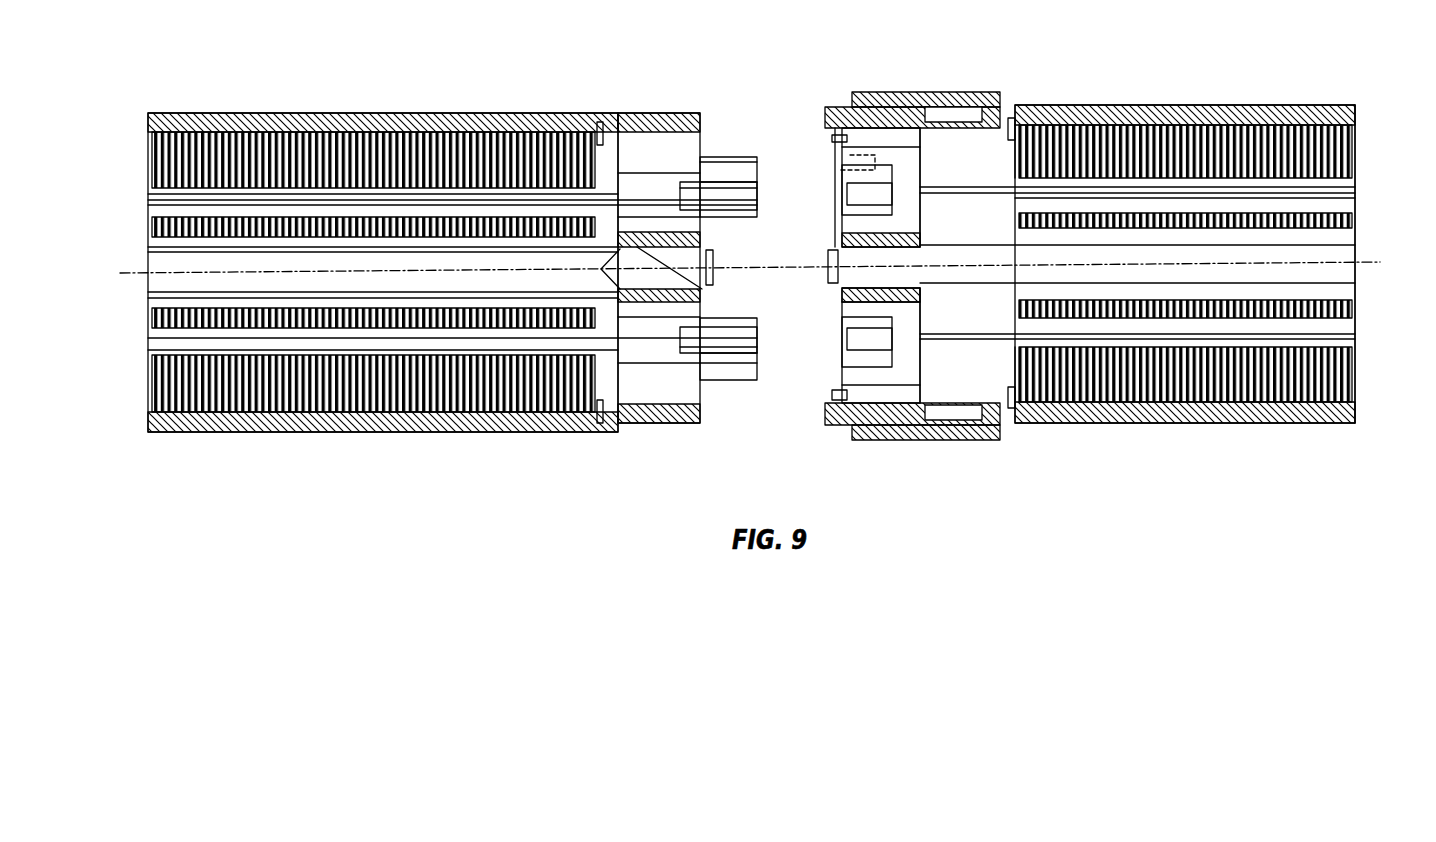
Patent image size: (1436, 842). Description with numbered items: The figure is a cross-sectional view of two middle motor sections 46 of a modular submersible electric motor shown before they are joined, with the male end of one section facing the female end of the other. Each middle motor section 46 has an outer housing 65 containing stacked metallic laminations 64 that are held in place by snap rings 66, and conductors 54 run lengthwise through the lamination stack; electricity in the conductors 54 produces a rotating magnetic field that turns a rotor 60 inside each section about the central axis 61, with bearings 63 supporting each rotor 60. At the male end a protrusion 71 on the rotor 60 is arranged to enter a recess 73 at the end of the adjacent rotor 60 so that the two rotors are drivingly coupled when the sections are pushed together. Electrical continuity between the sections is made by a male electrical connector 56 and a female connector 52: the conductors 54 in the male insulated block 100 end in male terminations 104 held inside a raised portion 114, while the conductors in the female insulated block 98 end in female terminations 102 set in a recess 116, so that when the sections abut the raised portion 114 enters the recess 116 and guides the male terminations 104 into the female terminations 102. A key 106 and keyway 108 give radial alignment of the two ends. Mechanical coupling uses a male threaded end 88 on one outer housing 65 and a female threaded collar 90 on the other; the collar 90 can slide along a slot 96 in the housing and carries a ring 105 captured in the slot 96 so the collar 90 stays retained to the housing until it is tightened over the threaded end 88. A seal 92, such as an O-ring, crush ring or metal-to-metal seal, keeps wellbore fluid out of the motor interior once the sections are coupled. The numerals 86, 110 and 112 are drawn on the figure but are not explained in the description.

The middle motor section 46 is at (232, 112).
The female connector 52 is at (923, 363).
The conductors 54 is at (355, 200).
The male electrical connector 56 is at (628, 150).
The rotor 60 is at (157, 280).
The axis 61 is at (1367, 263).
The bearings 63 is at (601, 269).
The metallic laminations 64 is at (1293, 377).
The outer housing 65 is at (452, 420).
The snap rings 66 is at (1010, 132).
The protrusion 71 is at (712, 250).
The recess 73 is at (828, 262).
The magnetic insert 86 is at (923, 280).
The male threaded end 88 is at (680, 112).
The female threaded collar 90 is at (973, 103).
The seal 92 is at (835, 107).
The slot 96 is at (932, 112).
The female insulated block 98 is at (913, 317).
The male insulated block 100 is at (637, 180).
The female termination 102 is at (855, 193).
The male termination 104 is at (742, 192).
The ring 105 is at (1005, 112).
The key 106 is at (710, 160).
The keyway 108 is at (848, 140).
The wedge surface 110 is at (845, 298).
The cam surface 112 is at (657, 284).
The raised portion 114 is at (705, 185).
The recess 116 is at (867, 360).